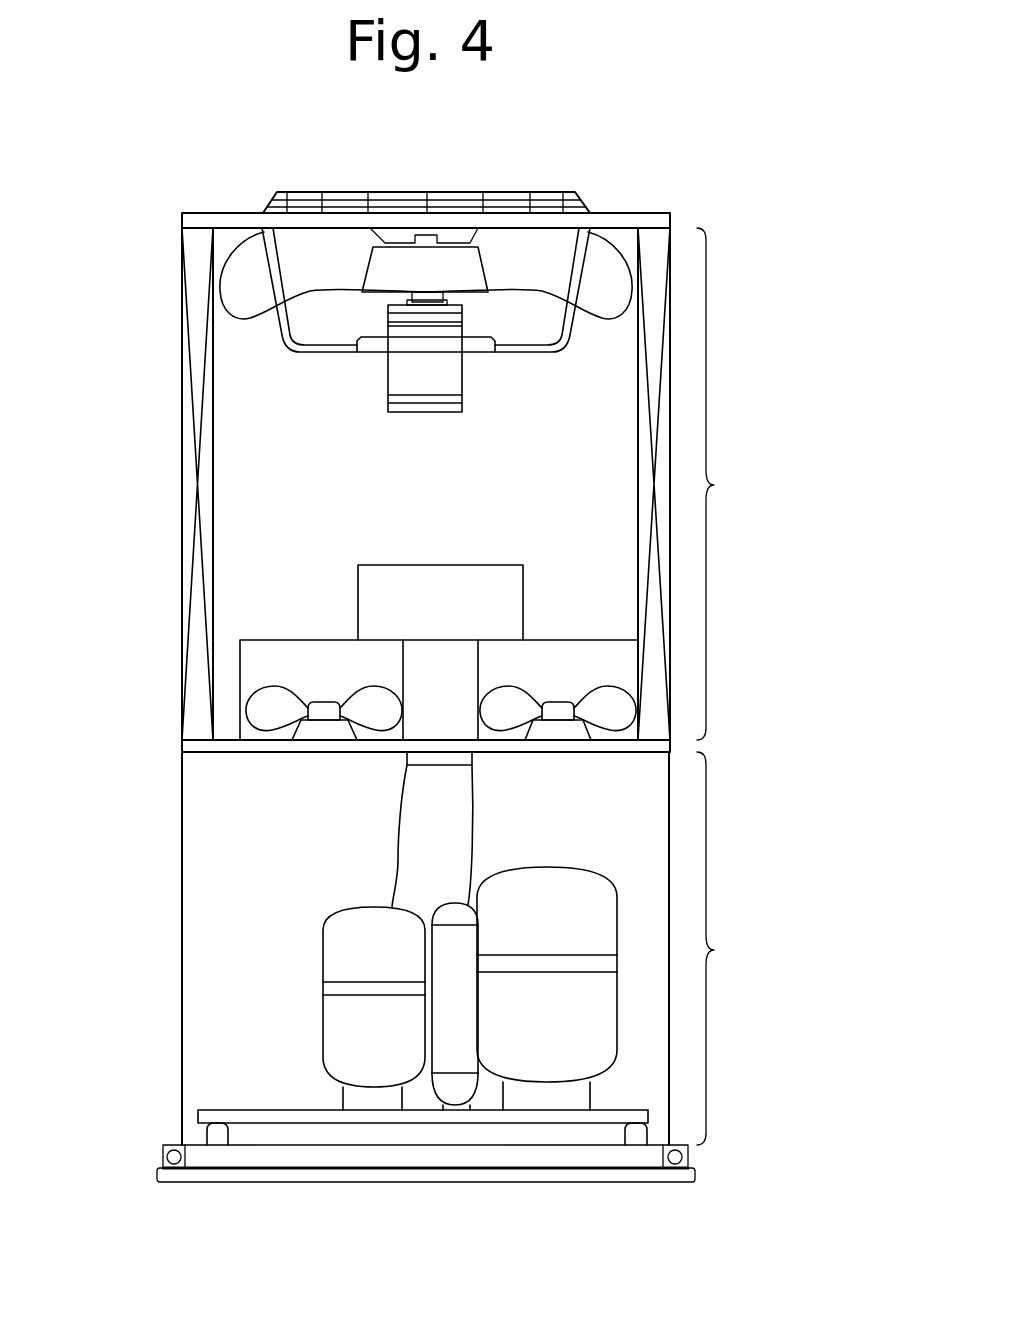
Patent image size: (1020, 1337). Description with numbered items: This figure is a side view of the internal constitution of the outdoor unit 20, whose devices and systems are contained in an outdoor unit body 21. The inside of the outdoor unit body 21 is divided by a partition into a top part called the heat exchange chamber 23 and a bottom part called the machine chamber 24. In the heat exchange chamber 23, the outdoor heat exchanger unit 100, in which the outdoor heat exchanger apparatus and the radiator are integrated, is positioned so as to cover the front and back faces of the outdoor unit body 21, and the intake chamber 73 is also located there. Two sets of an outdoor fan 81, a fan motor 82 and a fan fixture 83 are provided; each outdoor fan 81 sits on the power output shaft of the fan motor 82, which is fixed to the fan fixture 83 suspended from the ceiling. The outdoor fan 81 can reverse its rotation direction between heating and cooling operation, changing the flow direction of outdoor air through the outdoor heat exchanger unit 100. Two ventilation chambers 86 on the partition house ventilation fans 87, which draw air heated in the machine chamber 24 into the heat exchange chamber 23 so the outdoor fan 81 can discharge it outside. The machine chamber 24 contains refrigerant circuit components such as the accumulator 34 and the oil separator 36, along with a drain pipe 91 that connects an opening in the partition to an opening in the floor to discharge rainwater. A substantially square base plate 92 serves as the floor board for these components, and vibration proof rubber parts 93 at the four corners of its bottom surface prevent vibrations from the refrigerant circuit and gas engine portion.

The outdoor unit 20 is at (646, 159).
The outdoor unit body 21 is at (182, 800).
The heat exchange chamber 23 is at (729, 484).
The machine chamber 24 is at (729, 948).
The accumulator 34 is at (330, 918).
The oil separator 36 is at (470, 905).
The intake chamber 73 is at (523, 580).
The outdoor fan 81 is at (247, 308).
The fan motor 82 is at (437, 412).
The fan fixture 83 is at (548, 353).
The ventilation chamber 86 is at (310, 640).
The ventilation fan 87 is at (280, 690).
The drain pipe 91 is at (472, 785).
The base plate 92 is at (427, 1125).
The vibration proof rubber part 93 is at (228, 1133).
The outdoor heat exchanger unit 100 is at (213, 465).